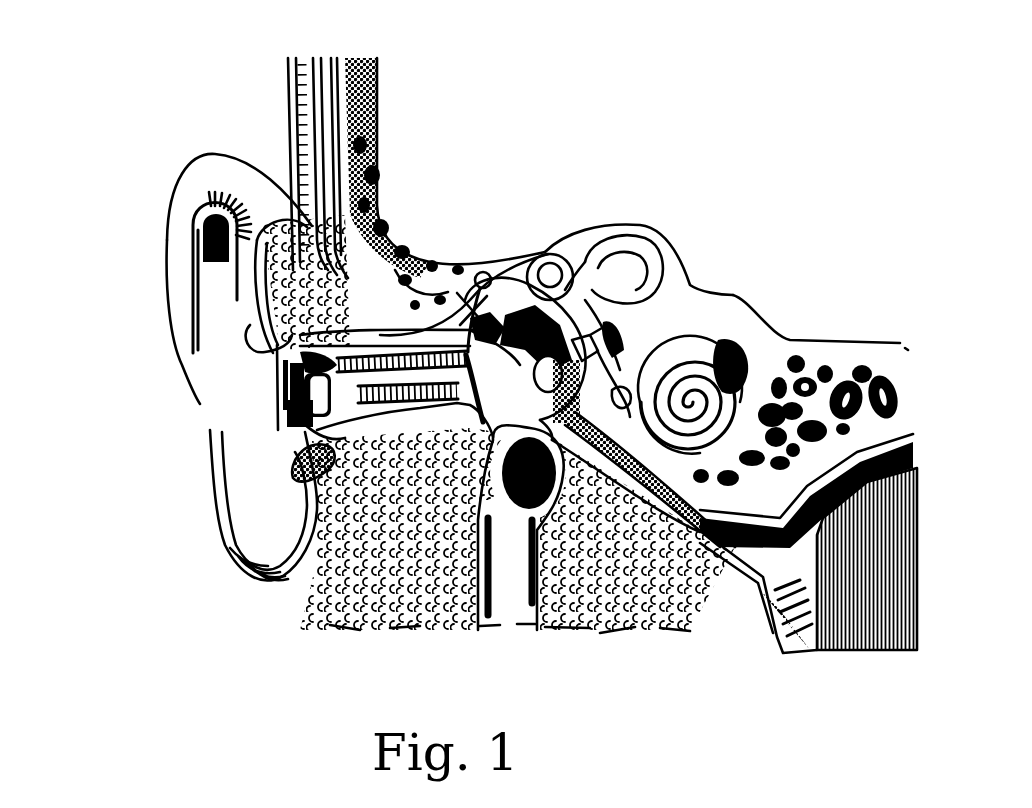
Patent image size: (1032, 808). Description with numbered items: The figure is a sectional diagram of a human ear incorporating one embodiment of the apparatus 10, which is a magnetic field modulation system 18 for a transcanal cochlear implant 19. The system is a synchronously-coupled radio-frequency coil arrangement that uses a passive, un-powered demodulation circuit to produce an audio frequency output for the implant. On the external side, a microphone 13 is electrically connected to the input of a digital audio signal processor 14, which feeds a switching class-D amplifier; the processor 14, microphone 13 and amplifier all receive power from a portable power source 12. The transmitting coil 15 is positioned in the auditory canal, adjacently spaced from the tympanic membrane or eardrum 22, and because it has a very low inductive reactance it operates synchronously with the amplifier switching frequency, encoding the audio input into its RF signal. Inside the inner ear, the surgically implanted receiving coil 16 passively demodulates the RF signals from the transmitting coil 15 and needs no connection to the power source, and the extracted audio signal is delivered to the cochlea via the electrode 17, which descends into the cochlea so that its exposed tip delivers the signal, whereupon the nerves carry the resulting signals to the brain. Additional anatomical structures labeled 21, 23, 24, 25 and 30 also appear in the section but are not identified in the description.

The apparatus 10 is at (231, 617).
The portable power source 12 is at (330, 420).
The microphone 13 is at (283, 385).
The digital audio signal processor 14 is at (292, 425).
The transmitting coil 15 is at (428, 373).
The receiving coil 16 is at (530, 340).
The electrode 17 is at (627, 405).
The magnetic field modulation system 18 is at (292, 366).
The transcanal cochlear implant 19 is at (667, 200).
The housing 21 is at (285, 360).
The tympanic membrane 22 is at (462, 402).
The malleus 23 is at (493, 300).
The incus 24 is at (572, 335).
The auricle 25 is at (300, 210).
The cochlea 30 is at (695, 360).